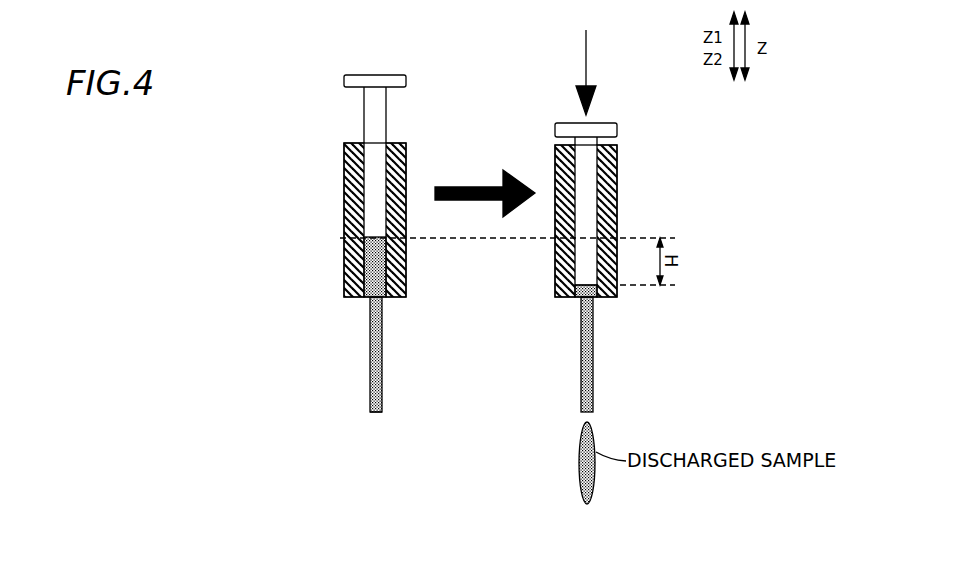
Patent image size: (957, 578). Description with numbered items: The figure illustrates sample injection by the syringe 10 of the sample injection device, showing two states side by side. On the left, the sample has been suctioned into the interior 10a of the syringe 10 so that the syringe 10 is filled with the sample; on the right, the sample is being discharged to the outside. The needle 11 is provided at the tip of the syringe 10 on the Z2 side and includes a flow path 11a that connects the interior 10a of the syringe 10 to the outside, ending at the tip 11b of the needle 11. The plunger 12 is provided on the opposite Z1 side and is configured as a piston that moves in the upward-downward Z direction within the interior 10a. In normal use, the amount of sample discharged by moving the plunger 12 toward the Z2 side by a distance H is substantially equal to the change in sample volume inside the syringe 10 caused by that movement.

The syringe 10 is at (340, 211).
The interior of the syringe 10a is at (380, 280).
The needle 11 is at (385, 371).
The flow path 11a is at (381, 353).
The tip of the needle 11b is at (378, 413).
The plunger 12 is at (366, 118).